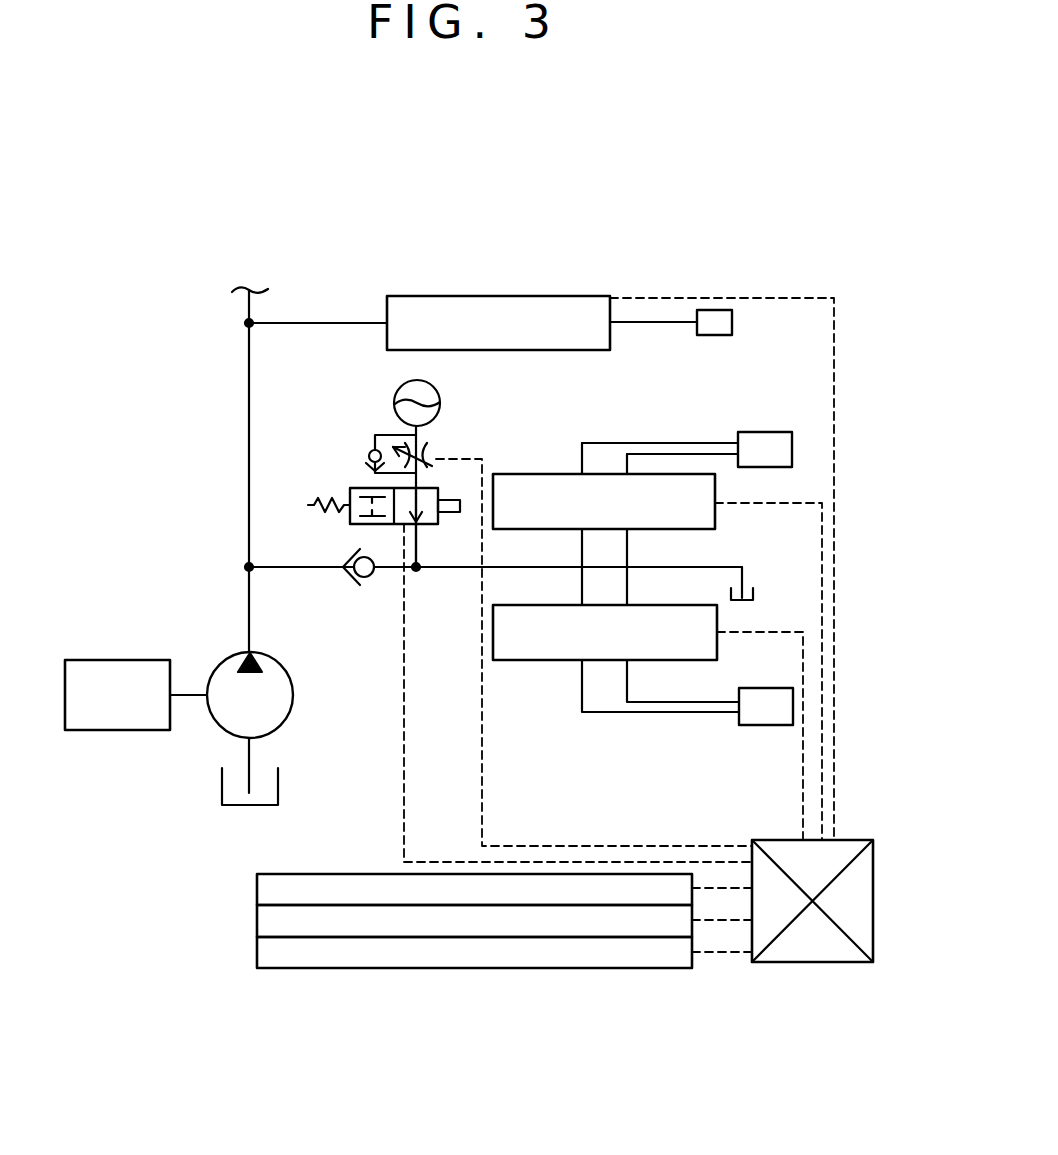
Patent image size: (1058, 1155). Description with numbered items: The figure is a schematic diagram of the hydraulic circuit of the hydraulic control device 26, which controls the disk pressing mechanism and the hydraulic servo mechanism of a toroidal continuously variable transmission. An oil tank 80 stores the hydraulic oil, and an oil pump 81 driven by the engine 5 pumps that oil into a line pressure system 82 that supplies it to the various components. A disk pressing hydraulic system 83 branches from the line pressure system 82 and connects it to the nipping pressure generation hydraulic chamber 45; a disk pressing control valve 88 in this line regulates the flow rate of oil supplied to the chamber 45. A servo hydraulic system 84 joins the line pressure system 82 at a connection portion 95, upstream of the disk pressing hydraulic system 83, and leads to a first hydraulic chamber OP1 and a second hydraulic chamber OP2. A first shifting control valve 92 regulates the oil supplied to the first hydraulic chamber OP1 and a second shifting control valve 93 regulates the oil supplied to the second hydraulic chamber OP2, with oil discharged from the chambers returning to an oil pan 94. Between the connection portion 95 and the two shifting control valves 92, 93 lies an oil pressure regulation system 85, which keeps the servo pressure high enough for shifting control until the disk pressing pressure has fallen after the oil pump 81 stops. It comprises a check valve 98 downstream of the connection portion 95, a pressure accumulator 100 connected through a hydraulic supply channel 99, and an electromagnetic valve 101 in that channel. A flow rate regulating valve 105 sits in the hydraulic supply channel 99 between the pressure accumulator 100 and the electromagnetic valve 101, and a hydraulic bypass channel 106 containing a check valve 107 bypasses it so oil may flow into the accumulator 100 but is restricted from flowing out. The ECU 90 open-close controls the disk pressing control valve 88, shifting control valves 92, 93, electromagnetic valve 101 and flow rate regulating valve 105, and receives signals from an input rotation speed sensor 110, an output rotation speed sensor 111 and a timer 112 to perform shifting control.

The engine 5 is at (118, 660).
The hydraulic control device 26 is at (679, 237).
The nipping pressure generation hydraulic chamber 45 is at (712, 310).
The oil tank 80 is at (280, 790).
The oil pump 81 is at (296, 697).
The line pressure system 82 is at (247, 523).
The disk pressing hydraulic system 83 is at (338, 322).
The servo hydraulic system 84 is at (312, 570).
The oil pressure regulation system 85 is at (420, 487).
The disk pressing control valve 88 is at (495, 296).
The ECU 90 is at (757, 840).
The first shifting control valve 92 is at (718, 487).
The second shifting control valve 93 is at (718, 617).
The oil pan 94 is at (755, 594).
The connection portion 95 is at (245, 567).
The check valve 98 is at (353, 592).
The hydraulic supply channel 99 is at (420, 560).
The pressure accumulator 100 is at (395, 398).
The electromagnetic valve 101 is at (348, 515).
The flow rate regulating valve 105 is at (430, 459).
The hydraulic bypass channel 106 is at (375, 435).
The check valve 107 is at (356, 462).
The input rotation speed sensor 110 is at (257, 887).
The output rotation speed sensor 111 is at (257, 920).
The timer 112 is at (257, 952).
The first hydraulic chamber OP1 is at (760, 432).
The second hydraulic chamber OP2 is at (765, 688).